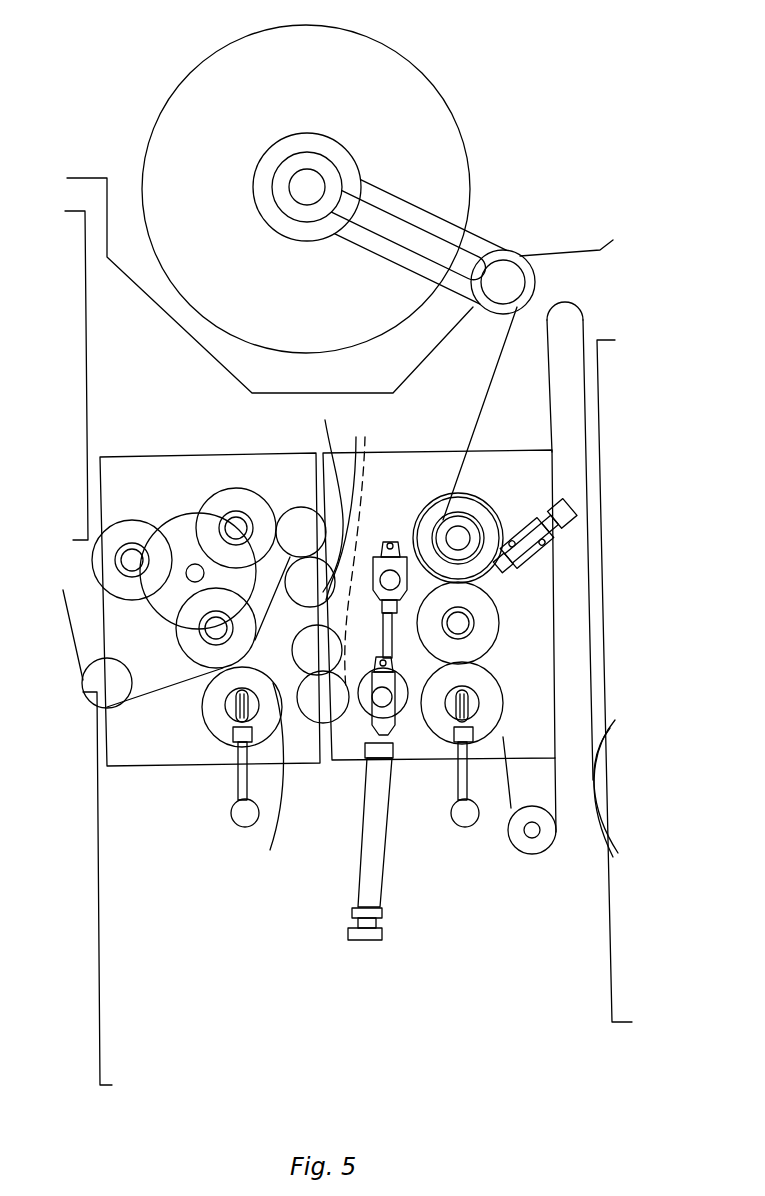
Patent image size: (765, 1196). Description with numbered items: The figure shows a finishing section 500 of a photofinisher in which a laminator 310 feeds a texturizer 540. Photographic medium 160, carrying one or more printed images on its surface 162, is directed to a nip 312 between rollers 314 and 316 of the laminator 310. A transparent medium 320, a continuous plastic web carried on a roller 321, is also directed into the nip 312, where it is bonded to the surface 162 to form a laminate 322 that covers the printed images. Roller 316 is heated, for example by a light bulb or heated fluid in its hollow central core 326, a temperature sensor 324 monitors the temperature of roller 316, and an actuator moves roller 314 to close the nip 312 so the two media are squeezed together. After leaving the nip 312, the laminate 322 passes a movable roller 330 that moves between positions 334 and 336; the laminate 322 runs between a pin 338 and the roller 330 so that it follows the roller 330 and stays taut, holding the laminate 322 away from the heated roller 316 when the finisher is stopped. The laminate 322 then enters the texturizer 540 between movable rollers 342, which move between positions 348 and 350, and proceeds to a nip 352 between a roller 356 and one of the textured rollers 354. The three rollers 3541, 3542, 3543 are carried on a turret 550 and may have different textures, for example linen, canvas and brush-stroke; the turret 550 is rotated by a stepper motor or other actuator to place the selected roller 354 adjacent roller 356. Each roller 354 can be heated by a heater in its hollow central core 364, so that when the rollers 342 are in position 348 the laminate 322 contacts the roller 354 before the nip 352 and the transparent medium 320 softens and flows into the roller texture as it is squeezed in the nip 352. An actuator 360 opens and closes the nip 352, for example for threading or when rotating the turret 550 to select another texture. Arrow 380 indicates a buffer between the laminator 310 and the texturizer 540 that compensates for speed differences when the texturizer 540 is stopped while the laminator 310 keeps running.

The finishing section 500 is at (482, 72).
The roller 321 is at (322, 143).
The photographic medium 160 is at (593, 333).
The texturizer 540 is at (154, 759).
The laminator 310 is at (436, 481).
The turret 550 is at (170, 512).
The rollers 354 is at (152, 547).
The roller 3541 is at (205, 653).
The roller 3542 is at (118, 535).
The roller 3543 is at (223, 500).
The hollow central core 364 is at (210, 628).
The movable rollers 342 is at (295, 488).
The position 348 is at (328, 500).
The laminate 322 is at (366, 551).
The nip 352 is at (205, 692).
The roller 356 is at (222, 728).
The actuator 360 is at (240, 826).
The position 350 is at (278, 780).
The arrow 380 is at (326, 785).
The transparent medium 320 is at (484, 422).
The temperature sensor 324 is at (545, 525).
The movable roller 330 is at (409, 557).
The pin 338 is at (387, 541).
The position 336 is at (391, 760).
The position 334 is at (400, 583).
The roller 316 is at (492, 640).
The hollow central core 326 is at (463, 623).
The nip 312 is at (472, 666).
The roller 314 is at (495, 692).
The surface 162 is at (505, 782).